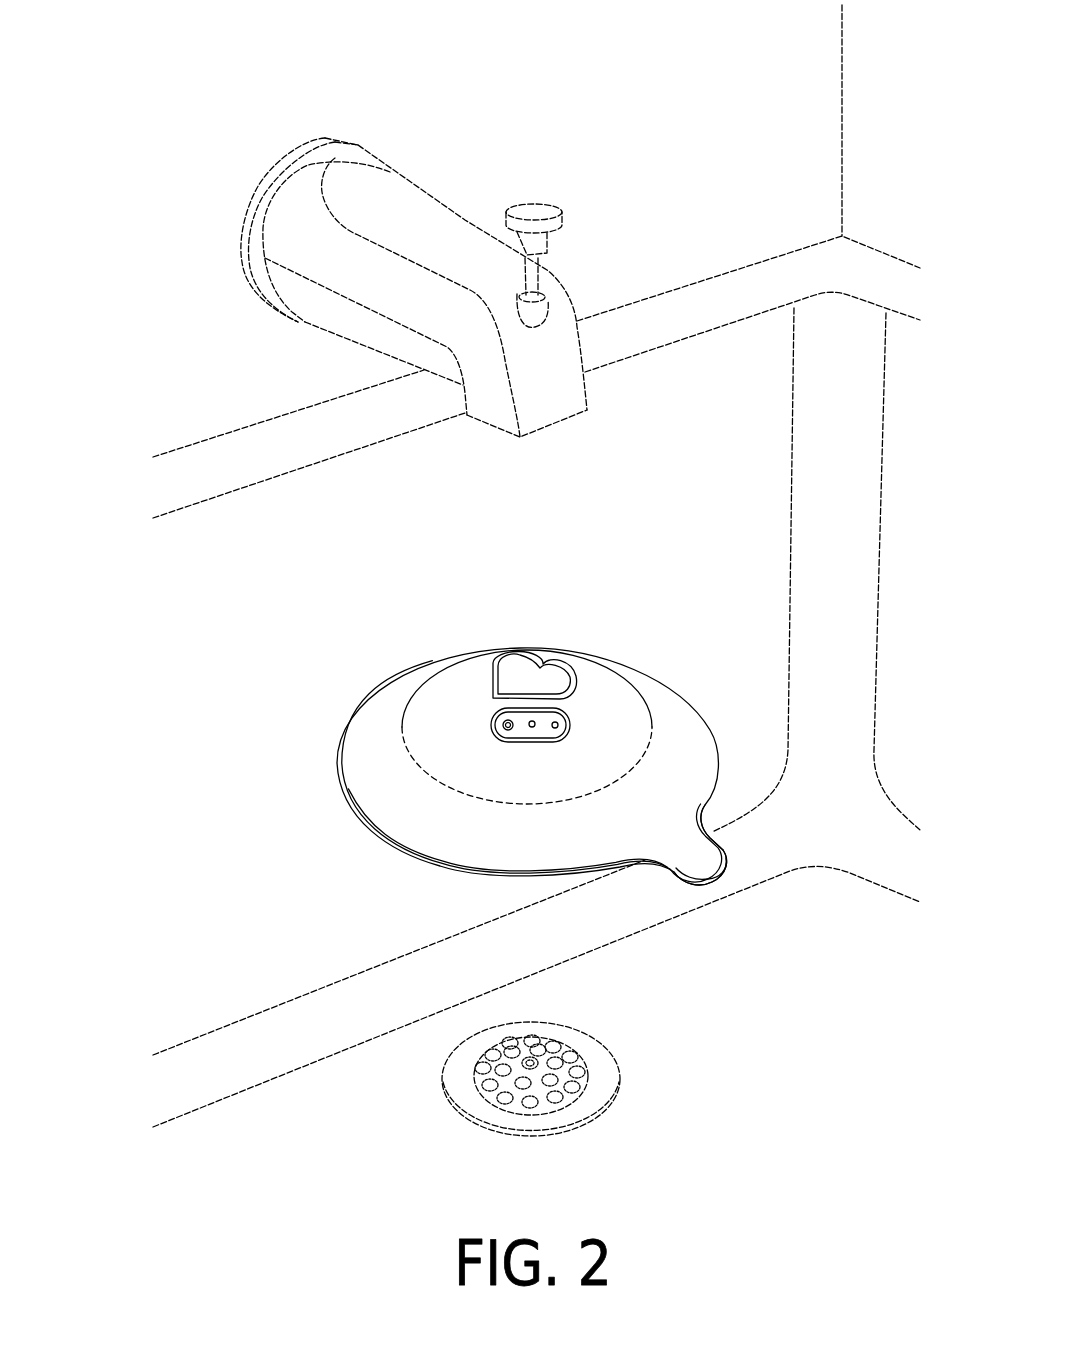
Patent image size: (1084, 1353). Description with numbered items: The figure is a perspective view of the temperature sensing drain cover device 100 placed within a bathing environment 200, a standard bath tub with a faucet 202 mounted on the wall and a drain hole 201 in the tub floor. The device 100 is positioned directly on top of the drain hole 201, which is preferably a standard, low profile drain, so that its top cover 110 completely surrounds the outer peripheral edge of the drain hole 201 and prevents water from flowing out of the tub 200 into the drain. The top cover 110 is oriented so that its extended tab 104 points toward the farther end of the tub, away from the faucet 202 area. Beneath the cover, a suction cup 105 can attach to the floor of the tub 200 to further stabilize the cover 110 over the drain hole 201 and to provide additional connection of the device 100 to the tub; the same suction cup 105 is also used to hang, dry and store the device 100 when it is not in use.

The device 100 is at (523, 774).
The extended tab 104 is at (725, 855).
The suction cup 105 is at (698, 882).
The top cover 110 is at (600, 662).
The bathing environment 200 is at (150, 345).
The drain hole 201 is at (600, 1050).
The faucet 202 is at (583, 397).